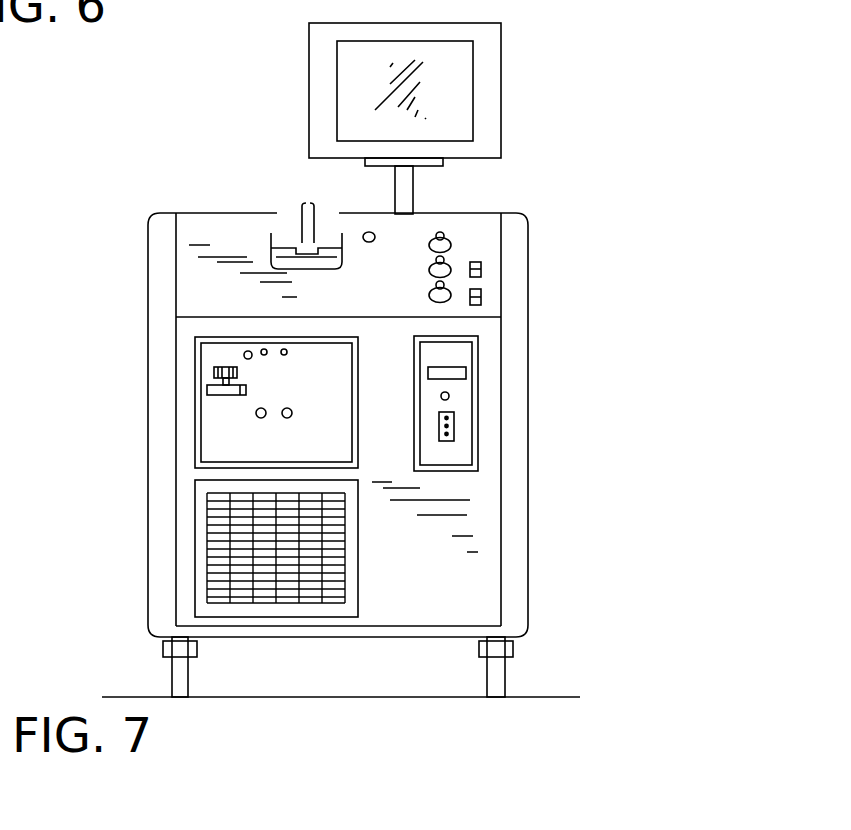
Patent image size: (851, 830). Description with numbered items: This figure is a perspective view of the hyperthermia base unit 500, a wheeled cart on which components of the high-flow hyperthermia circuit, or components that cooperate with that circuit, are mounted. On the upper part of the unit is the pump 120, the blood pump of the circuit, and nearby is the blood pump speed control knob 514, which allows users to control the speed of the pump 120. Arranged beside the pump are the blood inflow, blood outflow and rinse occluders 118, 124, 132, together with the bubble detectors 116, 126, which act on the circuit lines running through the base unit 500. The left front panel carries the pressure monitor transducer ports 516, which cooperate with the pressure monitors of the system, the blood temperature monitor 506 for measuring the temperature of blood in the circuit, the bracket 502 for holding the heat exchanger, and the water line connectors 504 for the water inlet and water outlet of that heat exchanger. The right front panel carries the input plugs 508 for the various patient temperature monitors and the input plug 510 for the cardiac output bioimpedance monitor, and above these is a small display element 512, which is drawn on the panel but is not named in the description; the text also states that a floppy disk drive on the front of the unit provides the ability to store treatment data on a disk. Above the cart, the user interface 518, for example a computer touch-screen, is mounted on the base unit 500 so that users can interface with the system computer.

The hyperthermia base unit 500 is at (522, 53).
The user interface 518 is at (309, 71).
The pump 120 is at (277, 211).
The blood pump speed control knob 514 is at (376, 236).
The blood inflow occluder 118 is at (451, 243).
The blood outflow occluder 124 is at (555, 236).
The rinse occluder 132 is at (555, 240).
The bubble detector 116 is at (481, 270).
The bubble detector 126 is at (575, 313).
The pressure monitor transducer ports 516 is at (282, 349).
The blood temperature monitor 506 is at (244, 355).
The bracket 502 is at (207, 391).
The water line connectors 504 is at (283, 417).
The display readout 512 is at (466, 372).
The input plug for cardiac output bioimpedance monitor 510 is at (449, 396).
The input plugs 508 is at (454, 433).